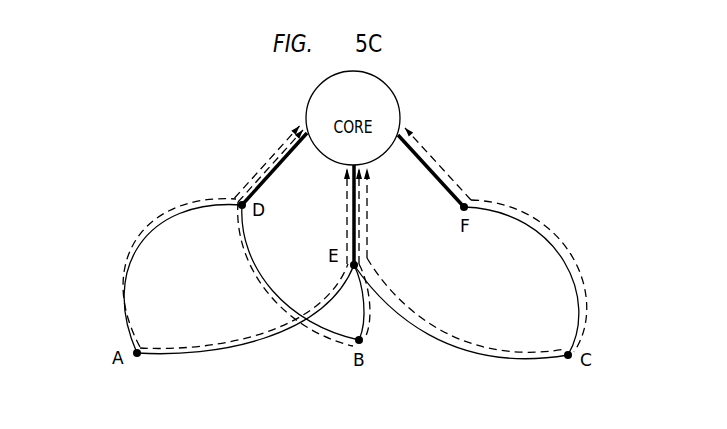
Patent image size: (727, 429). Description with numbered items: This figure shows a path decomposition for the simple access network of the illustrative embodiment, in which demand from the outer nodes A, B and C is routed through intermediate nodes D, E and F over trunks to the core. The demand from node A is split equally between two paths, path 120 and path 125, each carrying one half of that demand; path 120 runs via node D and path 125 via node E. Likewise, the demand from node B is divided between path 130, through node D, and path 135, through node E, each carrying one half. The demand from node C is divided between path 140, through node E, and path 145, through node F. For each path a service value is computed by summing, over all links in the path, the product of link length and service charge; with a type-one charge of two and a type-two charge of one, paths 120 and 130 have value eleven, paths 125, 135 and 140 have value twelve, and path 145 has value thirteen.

The path 120 is at (256, 164).
The path 125 is at (218, 339).
The path 130 is at (254, 277).
The path 135 is at (371, 325).
The path 140 is at (369, 224).
The path 145 is at (455, 168).